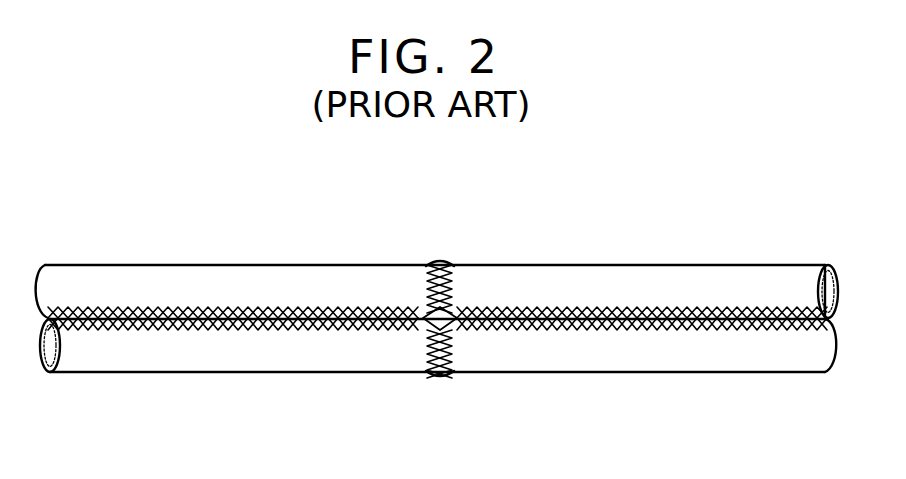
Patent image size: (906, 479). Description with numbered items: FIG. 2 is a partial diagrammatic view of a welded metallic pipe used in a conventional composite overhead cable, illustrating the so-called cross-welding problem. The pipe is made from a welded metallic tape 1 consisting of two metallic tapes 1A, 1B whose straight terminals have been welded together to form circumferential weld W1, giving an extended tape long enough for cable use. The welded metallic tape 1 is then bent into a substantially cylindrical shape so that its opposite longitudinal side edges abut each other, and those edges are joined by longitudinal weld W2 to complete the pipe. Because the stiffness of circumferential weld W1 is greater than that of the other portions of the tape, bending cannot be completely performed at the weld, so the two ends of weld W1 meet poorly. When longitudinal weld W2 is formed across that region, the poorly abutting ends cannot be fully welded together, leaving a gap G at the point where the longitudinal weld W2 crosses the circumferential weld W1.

The welded metallic tape 1 is at (437, 316).
The metallic tape 1A is at (190, 277).
The metallic tape 1B is at (697, 350).
The circumferential weld W1 is at (428, 288).
The longitudinal weld W2 is at (357, 323).
The gap G is at (452, 327).